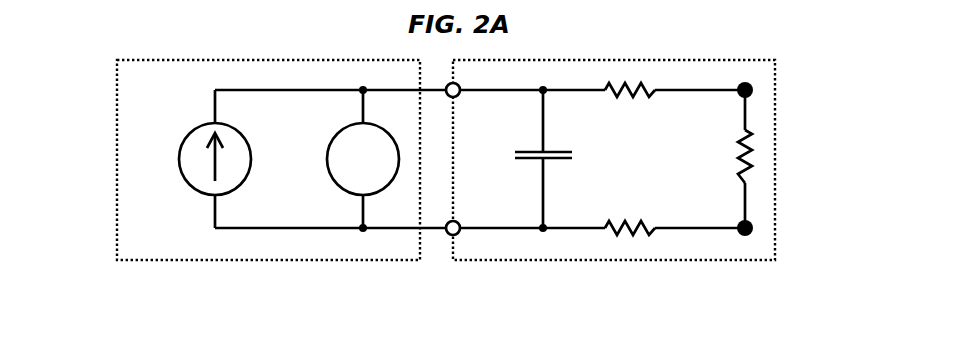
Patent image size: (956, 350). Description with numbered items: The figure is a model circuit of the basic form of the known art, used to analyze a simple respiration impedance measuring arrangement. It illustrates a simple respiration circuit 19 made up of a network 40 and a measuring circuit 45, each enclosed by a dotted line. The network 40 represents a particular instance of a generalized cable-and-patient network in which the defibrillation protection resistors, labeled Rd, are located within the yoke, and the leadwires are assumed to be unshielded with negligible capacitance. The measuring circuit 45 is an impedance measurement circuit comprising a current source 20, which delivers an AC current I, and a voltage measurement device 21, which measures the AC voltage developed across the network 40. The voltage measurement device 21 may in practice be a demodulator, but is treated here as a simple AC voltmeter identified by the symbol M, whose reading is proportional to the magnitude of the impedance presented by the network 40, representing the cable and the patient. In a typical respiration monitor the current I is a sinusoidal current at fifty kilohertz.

The respiration circuit 19 is at (188, 294).
The current source 20 is at (197, 128).
The voltage measurement device 21 is at (348, 191).
The network 40 is at (775, 199).
The measuring circuit 45 is at (117, 183).